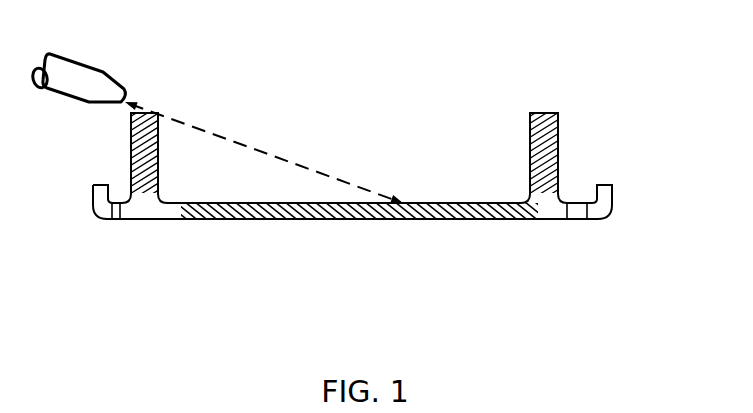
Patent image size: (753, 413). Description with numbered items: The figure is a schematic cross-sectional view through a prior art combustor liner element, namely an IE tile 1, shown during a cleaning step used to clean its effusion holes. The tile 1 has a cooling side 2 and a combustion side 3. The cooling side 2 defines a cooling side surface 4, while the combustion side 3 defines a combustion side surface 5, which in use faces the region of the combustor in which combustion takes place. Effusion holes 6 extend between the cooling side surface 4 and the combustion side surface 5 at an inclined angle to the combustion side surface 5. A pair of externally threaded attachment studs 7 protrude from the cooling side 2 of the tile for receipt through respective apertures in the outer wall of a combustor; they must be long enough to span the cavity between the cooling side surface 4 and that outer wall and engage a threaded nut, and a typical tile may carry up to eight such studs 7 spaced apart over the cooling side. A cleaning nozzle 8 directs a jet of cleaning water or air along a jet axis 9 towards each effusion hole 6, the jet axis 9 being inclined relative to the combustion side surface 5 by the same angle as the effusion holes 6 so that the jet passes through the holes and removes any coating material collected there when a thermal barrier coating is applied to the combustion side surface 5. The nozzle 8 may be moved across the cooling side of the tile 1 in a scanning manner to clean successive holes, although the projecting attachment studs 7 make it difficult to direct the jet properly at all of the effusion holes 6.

The IE tile 1 is at (396, 172).
The cooling side 2 is at (352, 213).
The combustion side 3 is at (406, 237).
The cooling side surface 4 is at (485, 202).
The combustion side surface 5 is at (463, 222).
The effusion holes 6 is at (262, 221).
The attachment studs 7 is at (140, 143).
The cleaning nozzle 8 is at (78, 75).
The jet axis 9 is at (282, 155).